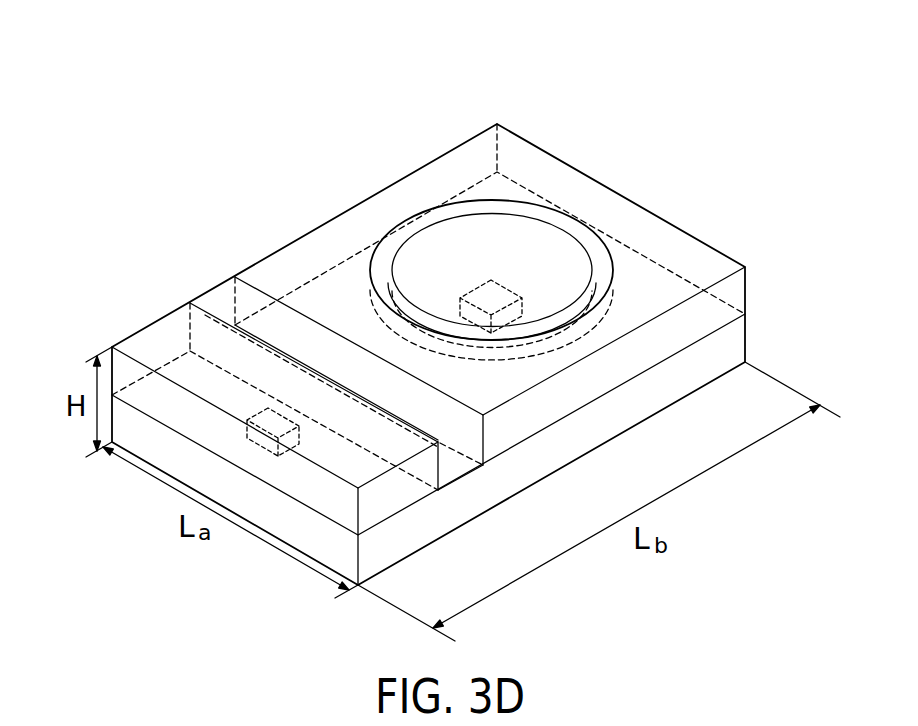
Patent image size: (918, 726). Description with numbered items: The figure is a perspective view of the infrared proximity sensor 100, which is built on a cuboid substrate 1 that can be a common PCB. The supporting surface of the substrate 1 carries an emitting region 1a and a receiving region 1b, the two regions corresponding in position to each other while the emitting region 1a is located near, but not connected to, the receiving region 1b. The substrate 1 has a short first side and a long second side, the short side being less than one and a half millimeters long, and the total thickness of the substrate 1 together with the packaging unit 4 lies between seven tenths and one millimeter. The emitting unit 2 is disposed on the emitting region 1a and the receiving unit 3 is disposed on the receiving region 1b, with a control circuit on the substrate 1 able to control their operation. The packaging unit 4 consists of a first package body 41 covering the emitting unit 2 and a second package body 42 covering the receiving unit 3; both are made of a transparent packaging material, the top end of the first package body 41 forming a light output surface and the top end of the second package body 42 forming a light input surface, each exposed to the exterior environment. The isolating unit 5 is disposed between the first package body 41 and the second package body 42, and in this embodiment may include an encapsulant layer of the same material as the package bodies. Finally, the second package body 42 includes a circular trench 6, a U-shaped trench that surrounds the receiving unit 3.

The infrared proximity sensor 100 is at (33, 42).
The substrate 1 is at (607, 422).
The emitting region 1a is at (407, 493).
The receiving region 1b is at (648, 355).
The emitting unit 2 is at (272, 412).
The receiving unit 3 is at (494, 292).
The packaging unit 4 is at (287, 201).
The first package body 41 is at (170, 335).
The second package body 42 is at (286, 283).
The isolating unit 5 is at (455, 468).
The circular trench 6 is at (470, 208).